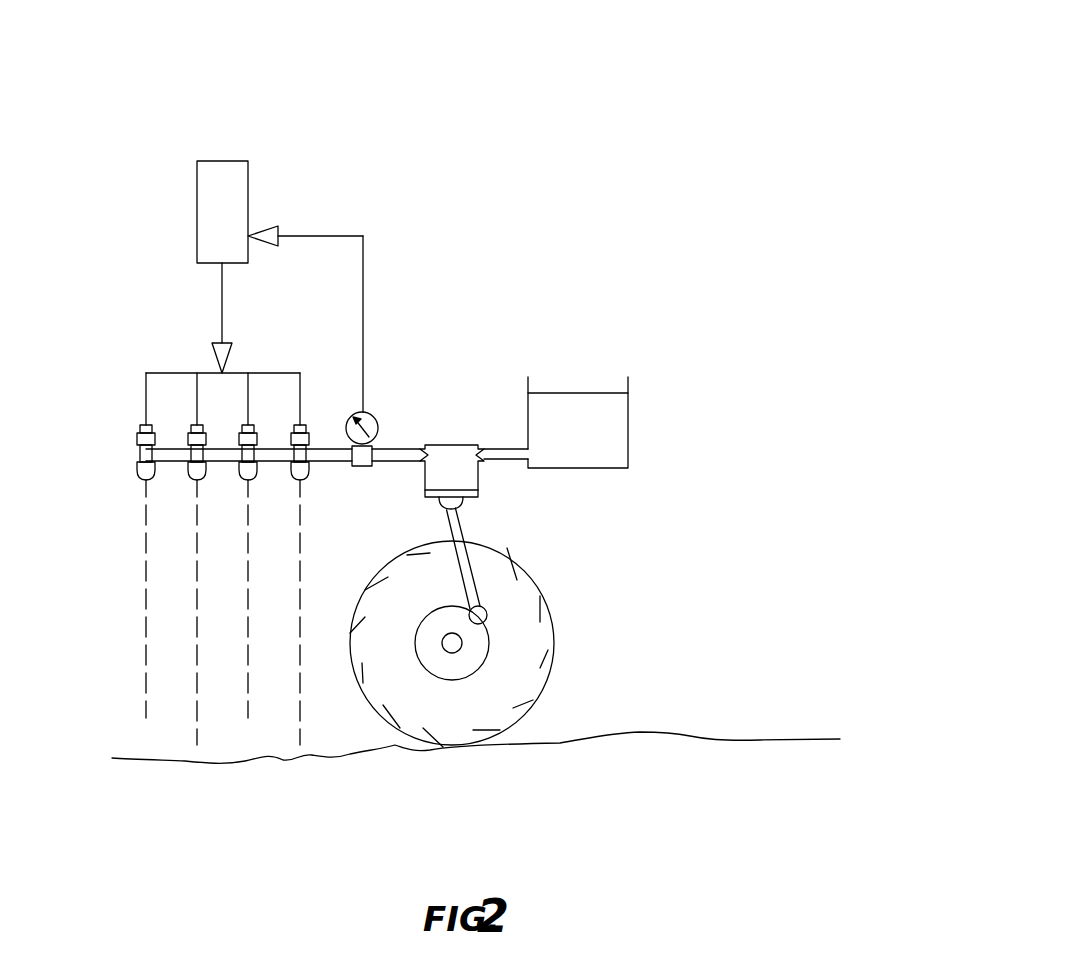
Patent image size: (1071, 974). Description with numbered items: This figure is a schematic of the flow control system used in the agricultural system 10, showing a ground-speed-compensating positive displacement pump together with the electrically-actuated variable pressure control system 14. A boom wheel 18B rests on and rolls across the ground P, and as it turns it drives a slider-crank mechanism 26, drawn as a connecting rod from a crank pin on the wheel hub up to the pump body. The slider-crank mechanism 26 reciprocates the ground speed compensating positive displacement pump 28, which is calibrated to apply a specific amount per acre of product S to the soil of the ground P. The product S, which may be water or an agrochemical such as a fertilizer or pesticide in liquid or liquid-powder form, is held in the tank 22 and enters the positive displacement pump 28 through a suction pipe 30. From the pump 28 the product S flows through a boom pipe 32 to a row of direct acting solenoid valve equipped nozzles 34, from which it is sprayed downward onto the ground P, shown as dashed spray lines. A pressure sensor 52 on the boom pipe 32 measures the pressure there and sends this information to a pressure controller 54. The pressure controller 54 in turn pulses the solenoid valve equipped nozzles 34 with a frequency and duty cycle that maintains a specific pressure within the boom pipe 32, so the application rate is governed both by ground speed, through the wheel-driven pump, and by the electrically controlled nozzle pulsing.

The agricultural system 10 is at (622, 73).
The electrically-actuated variable pressure control system 14 is at (150, 196).
The boom wheel 18B is at (540, 706).
The tank 22 is at (628, 425).
The slider-crank mechanism 26 is at (480, 578).
The ground speed compensating positive displacement pump 28 is at (452, 444).
The suction pipe 30 is at (502, 462).
The boom pipe 32 is at (390, 453).
The nozzles 34 is at (137, 437).
The pressure sensor 52 is at (373, 413).
The pressure controller 54 is at (250, 161).
The product S is at (146, 608).
The ground P is at (675, 733).